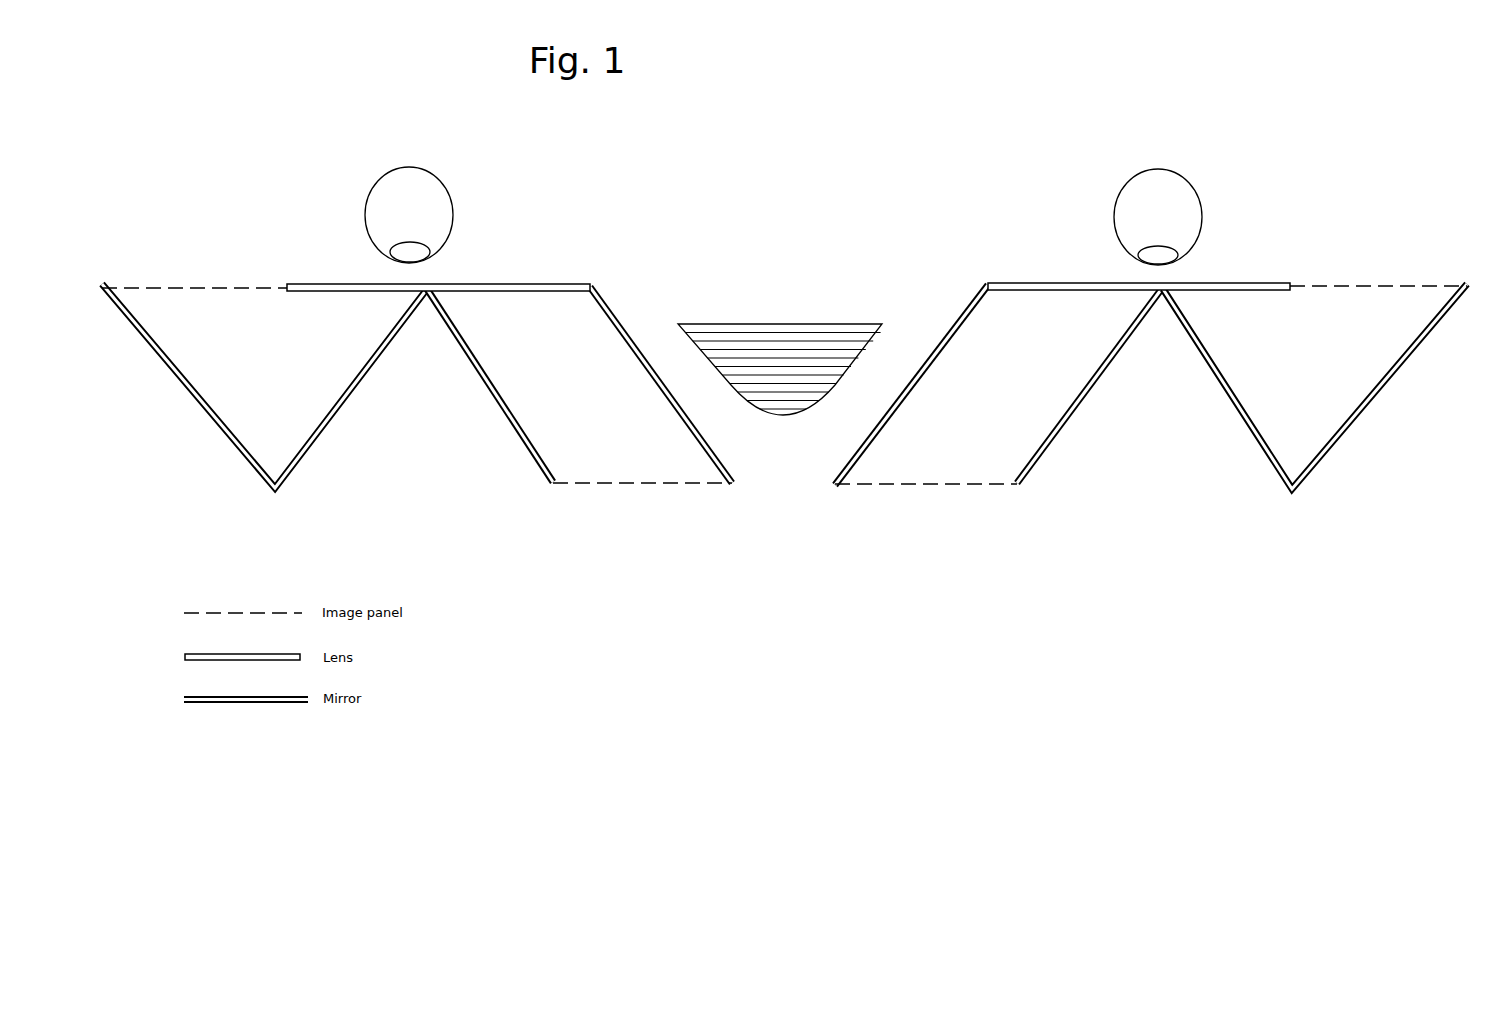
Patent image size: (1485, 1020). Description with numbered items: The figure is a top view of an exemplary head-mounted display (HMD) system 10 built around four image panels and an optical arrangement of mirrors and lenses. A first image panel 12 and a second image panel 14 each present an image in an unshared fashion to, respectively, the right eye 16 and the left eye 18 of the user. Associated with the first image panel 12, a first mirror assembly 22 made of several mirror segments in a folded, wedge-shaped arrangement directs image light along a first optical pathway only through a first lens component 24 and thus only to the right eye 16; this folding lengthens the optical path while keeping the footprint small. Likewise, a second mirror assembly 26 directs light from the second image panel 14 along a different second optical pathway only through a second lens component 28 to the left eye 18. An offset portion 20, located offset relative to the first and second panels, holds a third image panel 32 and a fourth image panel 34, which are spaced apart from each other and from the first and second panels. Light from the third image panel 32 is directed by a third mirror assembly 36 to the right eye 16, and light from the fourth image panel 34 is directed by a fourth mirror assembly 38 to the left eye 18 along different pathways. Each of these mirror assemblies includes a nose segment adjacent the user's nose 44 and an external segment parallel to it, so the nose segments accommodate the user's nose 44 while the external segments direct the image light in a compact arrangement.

The head-mounted display (HMD) system 10 is at (955, 180).
The first image panel 12 is at (187, 287).
The second image panel 14 is at (1367, 288).
The right eye 16 is at (453, 203).
The left eye 18 is at (1200, 220).
The offset portion 20 is at (795, 527).
The first mirror assembly 22 is at (340, 470).
The first lens component 24 is at (313, 287).
The second mirror assembly 26 is at (1360, 477).
The second lens component 28 is at (1252, 280).
The third image panel 32 is at (628, 492).
The fourth image panel 34 is at (925, 484).
The third mirror assembly 36 is at (620, 335).
The fourth mirror assembly 38 is at (963, 332).
The user's nose 44 is at (783, 323).